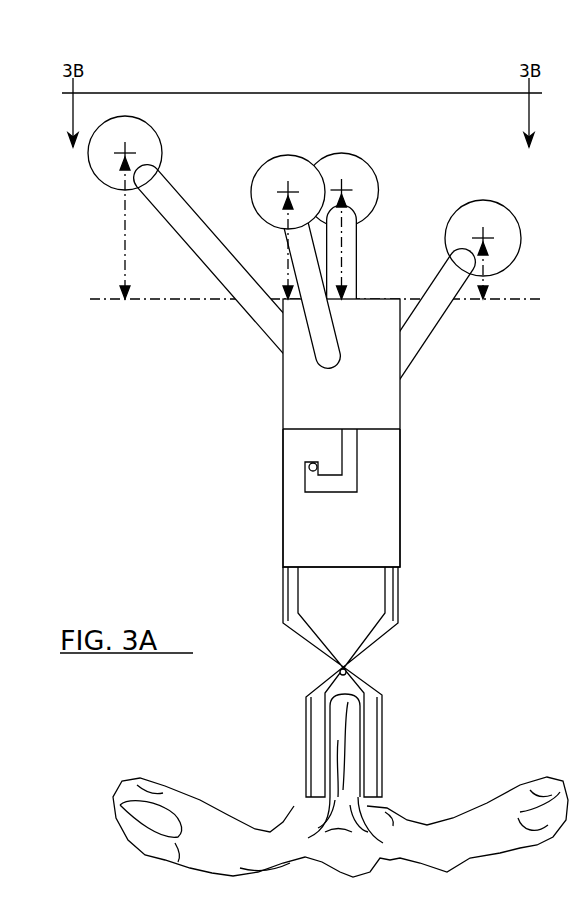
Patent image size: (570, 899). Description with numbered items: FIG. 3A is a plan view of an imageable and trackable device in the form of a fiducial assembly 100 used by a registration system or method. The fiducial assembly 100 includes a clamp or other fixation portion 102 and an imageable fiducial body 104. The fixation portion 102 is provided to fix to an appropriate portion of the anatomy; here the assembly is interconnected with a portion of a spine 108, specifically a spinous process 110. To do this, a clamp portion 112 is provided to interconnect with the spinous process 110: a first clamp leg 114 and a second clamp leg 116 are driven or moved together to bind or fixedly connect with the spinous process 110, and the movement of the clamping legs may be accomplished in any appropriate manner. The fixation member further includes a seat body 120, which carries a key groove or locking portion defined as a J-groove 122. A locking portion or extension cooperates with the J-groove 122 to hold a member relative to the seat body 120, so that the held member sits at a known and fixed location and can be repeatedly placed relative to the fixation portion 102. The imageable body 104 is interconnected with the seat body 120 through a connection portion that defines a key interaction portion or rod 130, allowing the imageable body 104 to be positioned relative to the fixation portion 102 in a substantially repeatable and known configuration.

The fiducial assembly 100 is at (197, 387).
The fixation portion 102 is at (416, 520).
The imageable fiducial body 104 is at (414, 388).
The spine 108 is at (413, 800).
The spinous process 110 is at (340, 735).
The clamp portion 112 is at (402, 740).
The first clamp leg 114 is at (375, 715).
The second clamp leg 116 is at (316, 716).
The seat body 120 is at (385, 483).
The J-groove 122 is at (347, 453).
The key interaction portion 130 is at (311, 471).